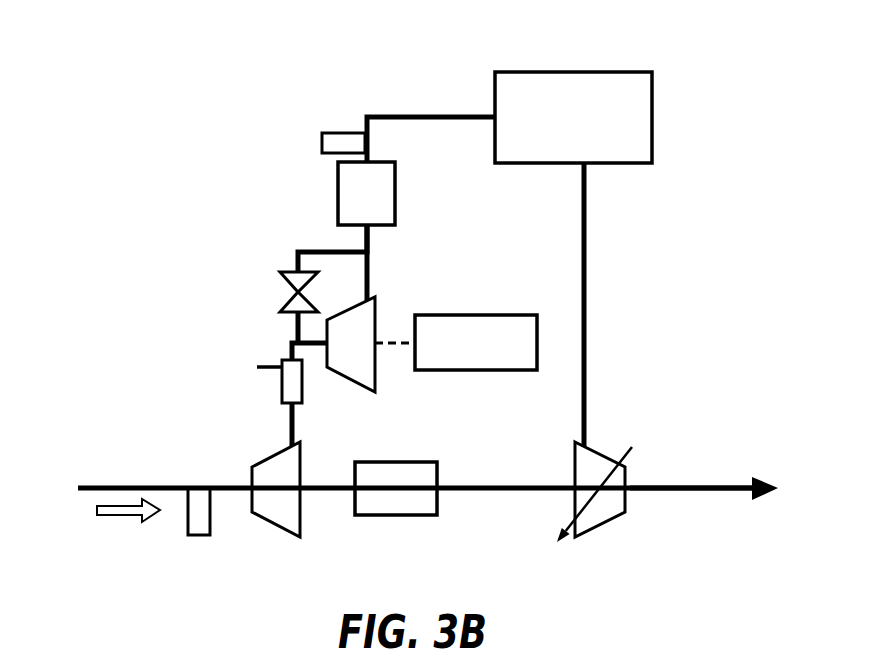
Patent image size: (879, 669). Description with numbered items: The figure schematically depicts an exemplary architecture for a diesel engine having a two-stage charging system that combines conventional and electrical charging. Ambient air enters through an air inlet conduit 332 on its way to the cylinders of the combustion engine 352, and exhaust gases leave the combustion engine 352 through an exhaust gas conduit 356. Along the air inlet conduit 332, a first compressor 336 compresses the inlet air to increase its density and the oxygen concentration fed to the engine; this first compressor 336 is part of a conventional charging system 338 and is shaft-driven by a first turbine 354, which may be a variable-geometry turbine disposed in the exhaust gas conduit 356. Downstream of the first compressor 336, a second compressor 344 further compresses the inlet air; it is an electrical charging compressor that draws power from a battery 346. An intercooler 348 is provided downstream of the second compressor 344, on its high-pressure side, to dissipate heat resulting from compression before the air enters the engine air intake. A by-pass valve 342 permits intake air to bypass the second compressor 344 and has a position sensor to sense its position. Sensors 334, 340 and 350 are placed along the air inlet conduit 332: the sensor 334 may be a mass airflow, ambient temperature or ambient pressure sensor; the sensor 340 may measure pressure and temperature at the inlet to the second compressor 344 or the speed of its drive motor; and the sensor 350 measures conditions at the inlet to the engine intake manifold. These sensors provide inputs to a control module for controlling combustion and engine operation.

The air inlet conduit 332 is at (145, 486).
The sensor 334 is at (185, 523).
The first compressor 336 is at (273, 523).
The conventional charging system 338 is at (395, 517).
The sensor 340 is at (275, 360).
The by-pass valve 342 is at (292, 272).
The second compressor 344 is at (358, 380).
The battery 346 is at (472, 372).
The intercooler 348 is at (338, 193).
The sensor 350 is at (348, 133).
The combustion engine 352 is at (568, 72).
The first turbine 354 is at (597, 523).
The exhaust gas conduit 356 is at (687, 485).